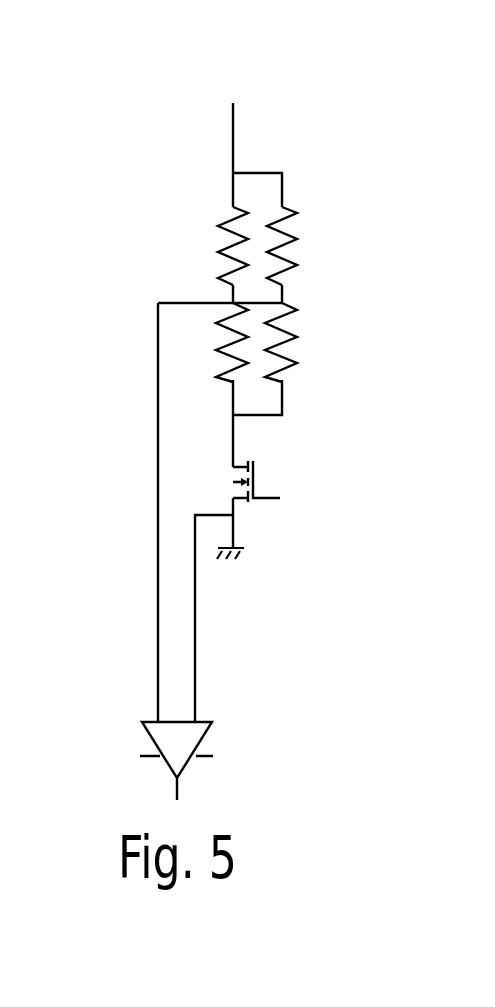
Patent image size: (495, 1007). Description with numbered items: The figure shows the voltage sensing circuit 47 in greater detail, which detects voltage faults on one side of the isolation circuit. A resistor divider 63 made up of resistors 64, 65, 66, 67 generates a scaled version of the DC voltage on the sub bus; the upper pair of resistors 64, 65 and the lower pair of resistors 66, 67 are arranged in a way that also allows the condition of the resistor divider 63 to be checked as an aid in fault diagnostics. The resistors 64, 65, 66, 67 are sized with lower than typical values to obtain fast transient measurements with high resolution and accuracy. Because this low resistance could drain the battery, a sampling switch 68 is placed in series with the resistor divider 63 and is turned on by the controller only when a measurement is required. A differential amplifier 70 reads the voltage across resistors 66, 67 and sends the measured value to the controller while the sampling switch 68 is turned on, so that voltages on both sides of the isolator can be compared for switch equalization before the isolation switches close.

The voltage sensing circuit 47 is at (170, 129).
The resistor divider 63 is at (303, 137).
The resistor 64 is at (225, 245).
The resistor 65 is at (288, 232).
The resistor 66 is at (225, 368).
The resistor 67 is at (285, 357).
The sampling switch 68 is at (260, 477).
The differential amplifier 70 is at (147, 733).